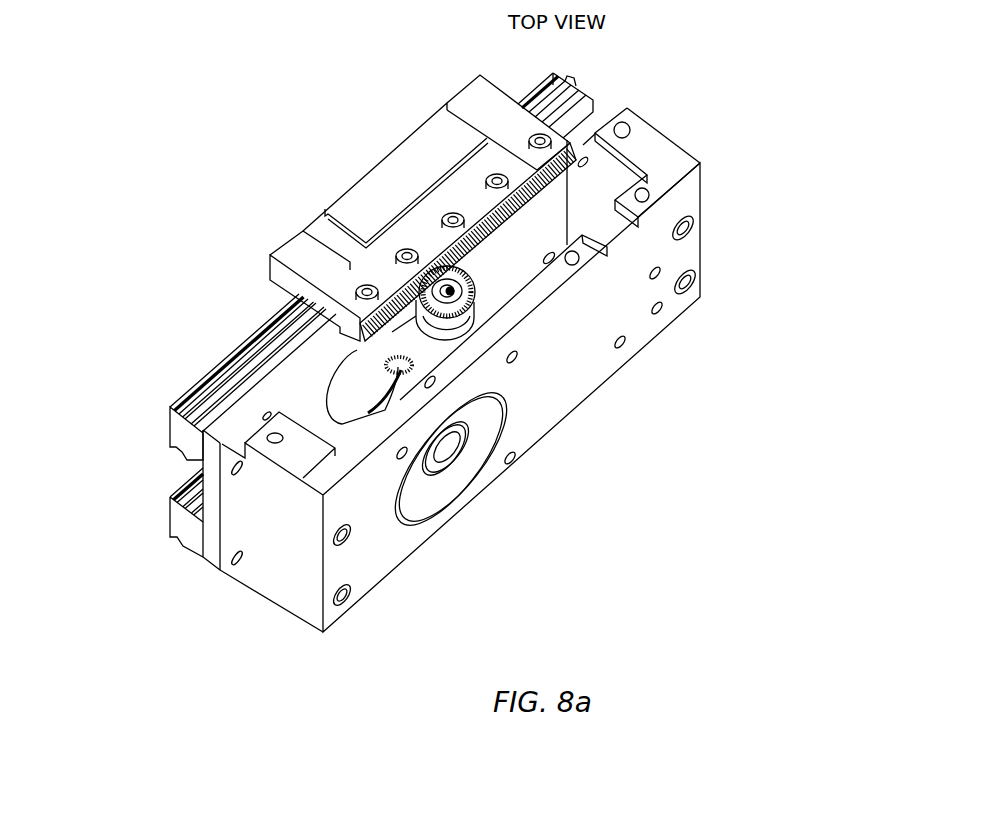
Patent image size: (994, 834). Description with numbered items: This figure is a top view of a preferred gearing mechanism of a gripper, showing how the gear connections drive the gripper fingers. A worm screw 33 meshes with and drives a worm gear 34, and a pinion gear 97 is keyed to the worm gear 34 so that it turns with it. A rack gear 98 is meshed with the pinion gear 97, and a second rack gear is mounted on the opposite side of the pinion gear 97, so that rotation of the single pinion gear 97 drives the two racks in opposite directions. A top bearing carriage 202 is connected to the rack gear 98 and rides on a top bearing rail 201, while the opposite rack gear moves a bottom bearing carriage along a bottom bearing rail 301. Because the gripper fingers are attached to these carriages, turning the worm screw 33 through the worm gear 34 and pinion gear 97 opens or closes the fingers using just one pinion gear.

The worm screw 33 is at (360, 392).
The worm gear 34 is at (413, 370).
The pinion gear 97 is at (485, 322).
The rack gear 98 is at (478, 184).
The top bearing rail 201 is at (187, 433).
The top bearing carriage 202 is at (367, 200).
The bottom bearing rail 301 is at (180, 520).